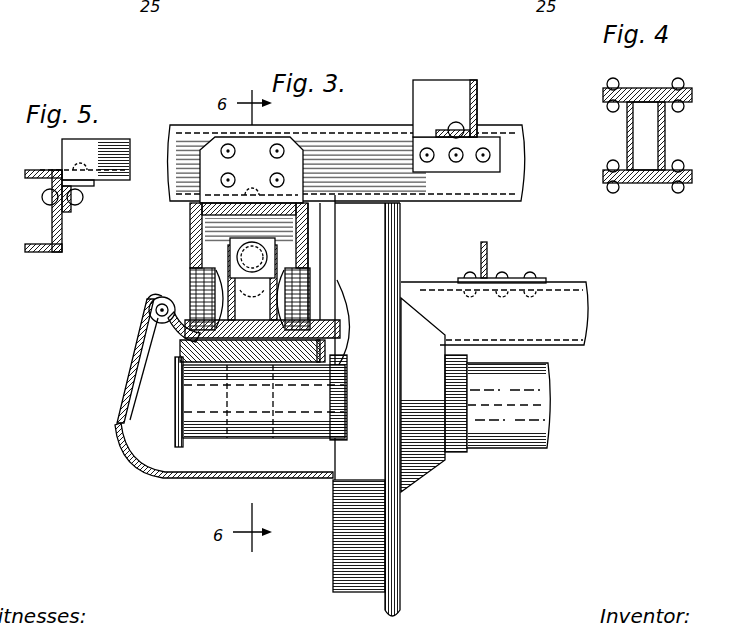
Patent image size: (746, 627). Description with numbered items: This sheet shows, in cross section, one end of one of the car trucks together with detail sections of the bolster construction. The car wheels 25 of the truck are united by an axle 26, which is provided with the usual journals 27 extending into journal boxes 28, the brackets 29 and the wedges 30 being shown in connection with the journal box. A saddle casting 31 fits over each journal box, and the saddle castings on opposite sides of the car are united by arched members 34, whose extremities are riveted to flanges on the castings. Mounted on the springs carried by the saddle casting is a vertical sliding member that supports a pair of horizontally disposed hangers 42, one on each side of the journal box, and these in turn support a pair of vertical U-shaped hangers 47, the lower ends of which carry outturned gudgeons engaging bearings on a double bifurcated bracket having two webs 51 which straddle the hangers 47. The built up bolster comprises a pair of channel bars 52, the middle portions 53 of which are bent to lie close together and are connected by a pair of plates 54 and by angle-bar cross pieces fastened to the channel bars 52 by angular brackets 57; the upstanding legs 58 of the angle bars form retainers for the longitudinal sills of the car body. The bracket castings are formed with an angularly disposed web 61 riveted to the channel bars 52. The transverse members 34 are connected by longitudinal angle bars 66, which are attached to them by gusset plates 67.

In FIG. 3, the car wheels 25 is at (387, 548).
In FIG. 3, the axle 26 is at (535, 422).
In FIG. 3, the journals 27 is at (198, 422).
In FIG. 3, the journal boxes 28 is at (210, 479).
In FIG. 3, the brackets 29 is at (262, 365).
In FIG. 3, the wedges 30 is at (222, 362).
In FIG. 3, the saddle casting 31 is at (278, 365).
In FIG. 3, the arched members 34 is at (577, 323).
In FIG. 3, the horizontally disposed hangers 42 is at (240, 258).
In FIG. 3, the vertical U-shaped hangers 47 is at (280, 263).
In FIG. 3, the webs 51 is at (195, 283).
In FIG. 5, the channel bars 52 is at (62, 247).
In FIG. 3, the middle portions 53 is at (328, 137).
In FIG. 4, the middle portions 53 is at (660, 143).
In FIG. 4, the plates 54 is at (641, 88).
In FIG. 3, the angular brackets 57 is at (420, 148).
In FIG. 5, the angular brackets 57 is at (80, 192).
In FIG. 3, the upstanding legs 58 is at (477, 110).
In FIG. 5, the upstanding legs 58 is at (75, 156).
In FIG. 3, the angularly disposed web 61 is at (263, 143).
In FIG. 3, the longitudinal angle bars 66 is at (487, 248).
In FIG. 3, the gusset plates 67 is at (542, 282).